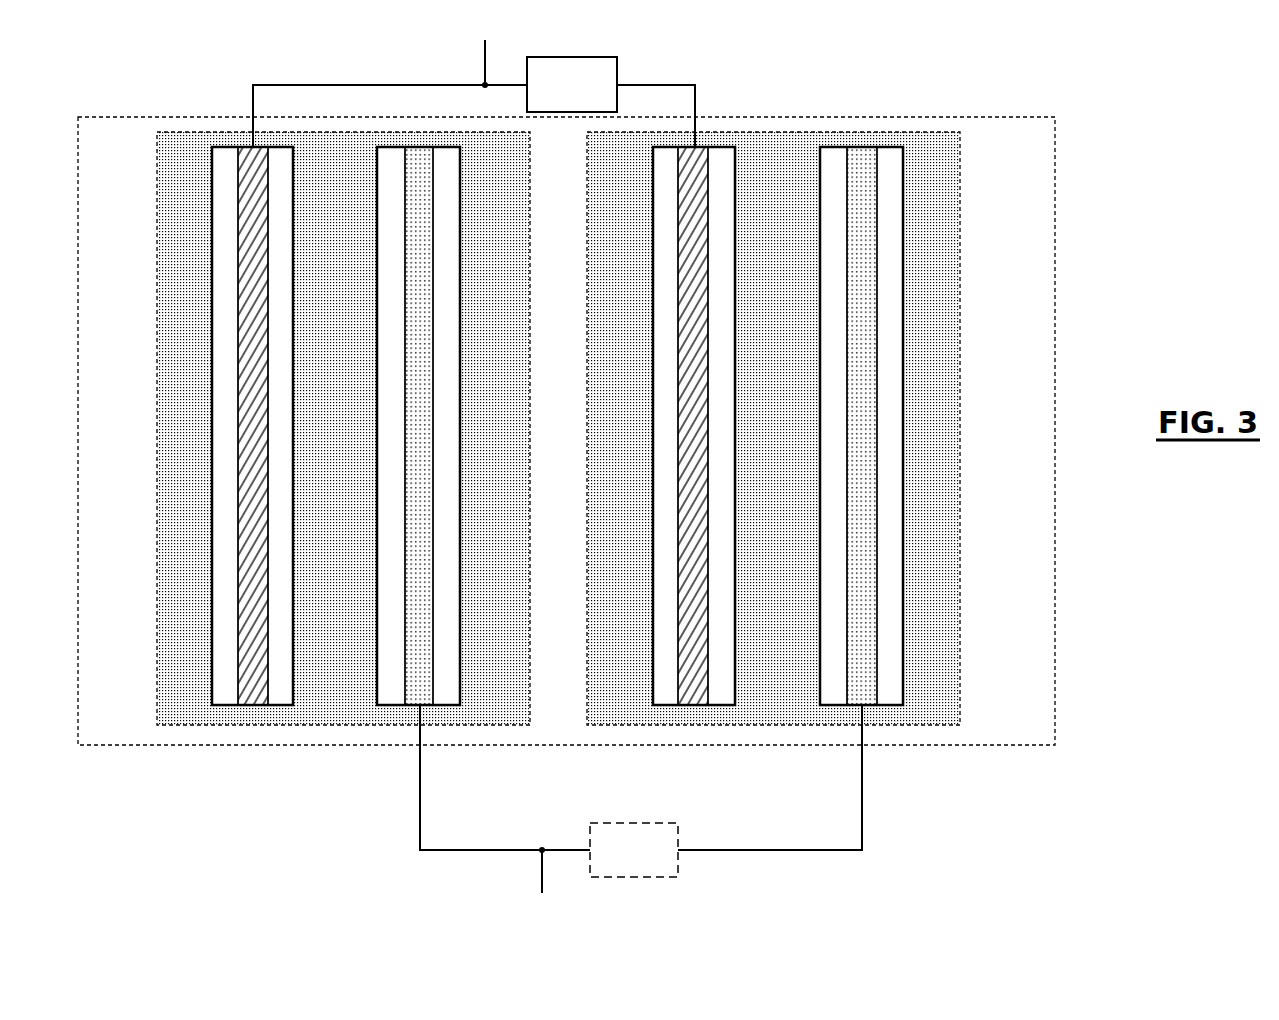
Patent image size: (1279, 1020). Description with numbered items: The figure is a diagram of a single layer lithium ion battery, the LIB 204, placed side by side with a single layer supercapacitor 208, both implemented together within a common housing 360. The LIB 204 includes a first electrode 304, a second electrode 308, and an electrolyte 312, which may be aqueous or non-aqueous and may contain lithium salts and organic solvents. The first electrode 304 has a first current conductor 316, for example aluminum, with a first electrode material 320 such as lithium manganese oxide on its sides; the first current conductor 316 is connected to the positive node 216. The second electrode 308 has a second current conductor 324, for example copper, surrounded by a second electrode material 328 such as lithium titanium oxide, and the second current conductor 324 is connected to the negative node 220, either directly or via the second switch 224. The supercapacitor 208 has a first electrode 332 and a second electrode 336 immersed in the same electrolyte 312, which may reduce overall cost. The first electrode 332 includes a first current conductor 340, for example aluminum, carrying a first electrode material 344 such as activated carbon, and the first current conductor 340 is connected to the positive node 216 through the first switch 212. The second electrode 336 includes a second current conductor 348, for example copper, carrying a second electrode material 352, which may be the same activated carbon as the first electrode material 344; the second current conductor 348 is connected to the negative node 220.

The LIB 204 is at (189, 132).
The supercapacitor 208 is at (908, 132).
The first switch 212 is at (578, 57).
The positive node 216 is at (488, 42).
The negative node 220 is at (542, 890).
The second switch 224 is at (649, 878).
The first electrode 304 is at (228, 378).
The second electrode 308 is at (420, 378).
The electrolyte 312 is at (558, 428).
The first current conductor 316 is at (267, 343).
The first electrode material 320 is at (220, 298).
The second current conductor 324 is at (423, 367).
The second electrode material 328 is at (380, 317).
The first electrode 332 is at (702, 378).
The second electrode 336 is at (899, 378).
The first current conductor 340 is at (703, 372).
The first electrode material 344 is at (662, 327).
The second current conductor 348 is at (862, 387).
The second electrode material 352 is at (828, 317).
The common housing 360 is at (1033, 117).